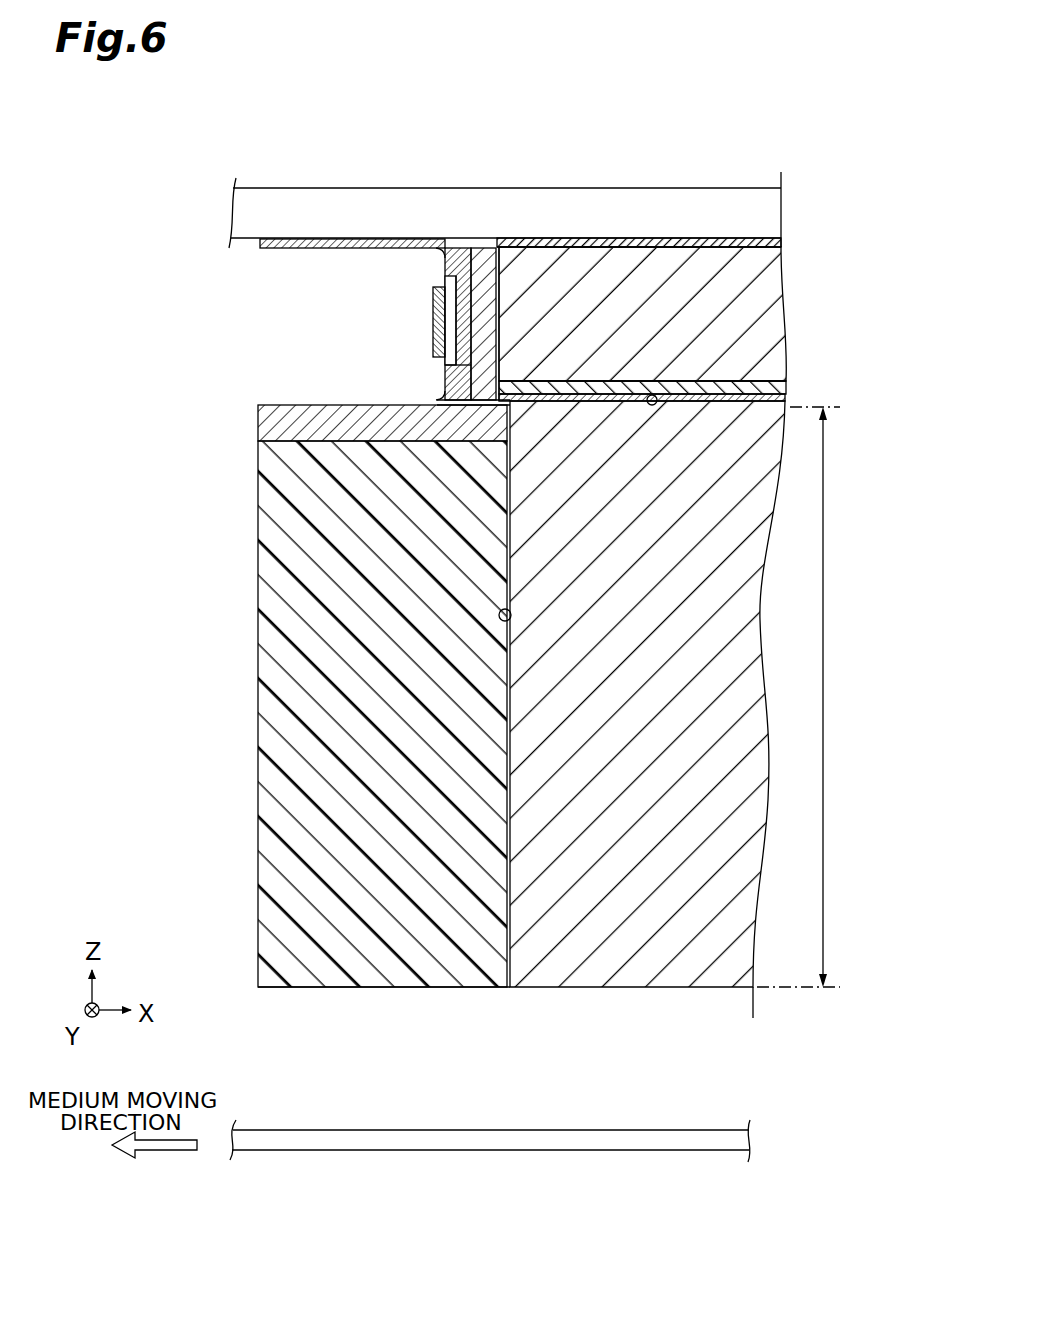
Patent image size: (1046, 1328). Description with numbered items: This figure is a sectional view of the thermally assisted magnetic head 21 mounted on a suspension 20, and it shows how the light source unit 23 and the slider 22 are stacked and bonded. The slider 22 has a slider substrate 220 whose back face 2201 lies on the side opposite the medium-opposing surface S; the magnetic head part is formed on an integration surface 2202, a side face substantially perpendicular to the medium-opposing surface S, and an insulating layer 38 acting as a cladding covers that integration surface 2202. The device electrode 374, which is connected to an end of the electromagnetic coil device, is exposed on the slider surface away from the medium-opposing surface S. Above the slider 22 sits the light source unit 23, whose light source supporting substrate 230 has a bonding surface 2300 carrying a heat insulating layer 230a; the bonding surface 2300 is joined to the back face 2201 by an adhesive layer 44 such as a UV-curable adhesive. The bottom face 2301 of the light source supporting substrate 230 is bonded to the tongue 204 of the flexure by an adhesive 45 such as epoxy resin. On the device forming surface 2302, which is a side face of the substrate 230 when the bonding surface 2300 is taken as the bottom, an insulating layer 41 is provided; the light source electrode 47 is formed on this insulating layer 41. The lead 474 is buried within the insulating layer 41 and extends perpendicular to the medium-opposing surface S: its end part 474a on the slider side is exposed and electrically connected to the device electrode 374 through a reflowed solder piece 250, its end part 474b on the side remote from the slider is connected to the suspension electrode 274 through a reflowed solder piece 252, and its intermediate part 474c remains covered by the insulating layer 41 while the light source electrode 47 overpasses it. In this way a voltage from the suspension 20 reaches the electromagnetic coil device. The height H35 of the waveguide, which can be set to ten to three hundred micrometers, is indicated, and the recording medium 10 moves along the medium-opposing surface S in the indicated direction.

The medium 10 is at (675, 1152).
The suspension 20 is at (260, 186).
The thermally assisted magnetic head 21 is at (113, 313).
The slider 22 is at (212, 453).
The light source unit 23 is at (212, 297).
The insulating layer 38 is at (432, 990).
The insulating layer 41 is at (482, 253).
The adhesive layer 44 is at (765, 388).
The adhesive 45 is at (583, 237).
The light source electrode 47 is at (433, 306).
The tongue 204 is at (327, 186).
The slider substrate 220 is at (590, 989).
The light source supporting substrate 230 is at (722, 260).
The heat insulating layer 230a is at (532, 388).
The reflowed solder piece 250 is at (437, 397).
The reflowed solder piece 252 is at (437, 252).
The electrode 274 is at (270, 250).
The device electrode 374 is at (280, 405).
The lead 474 is at (453, 257).
The end part 474a is at (445, 378).
The end part 474b is at (445, 282).
The intermediate part 474c is at (445, 332).
The back face 2201 is at (770, 397).
The integration surface 2202 is at (512, 611).
The bonding surface 2300 is at (652, 395).
The bottom face 2301 is at (635, 237).
The device forming surface 2302 is at (492, 257).
The height H35 is at (818, 697).
The medium-opposing surface S is at (262, 988).